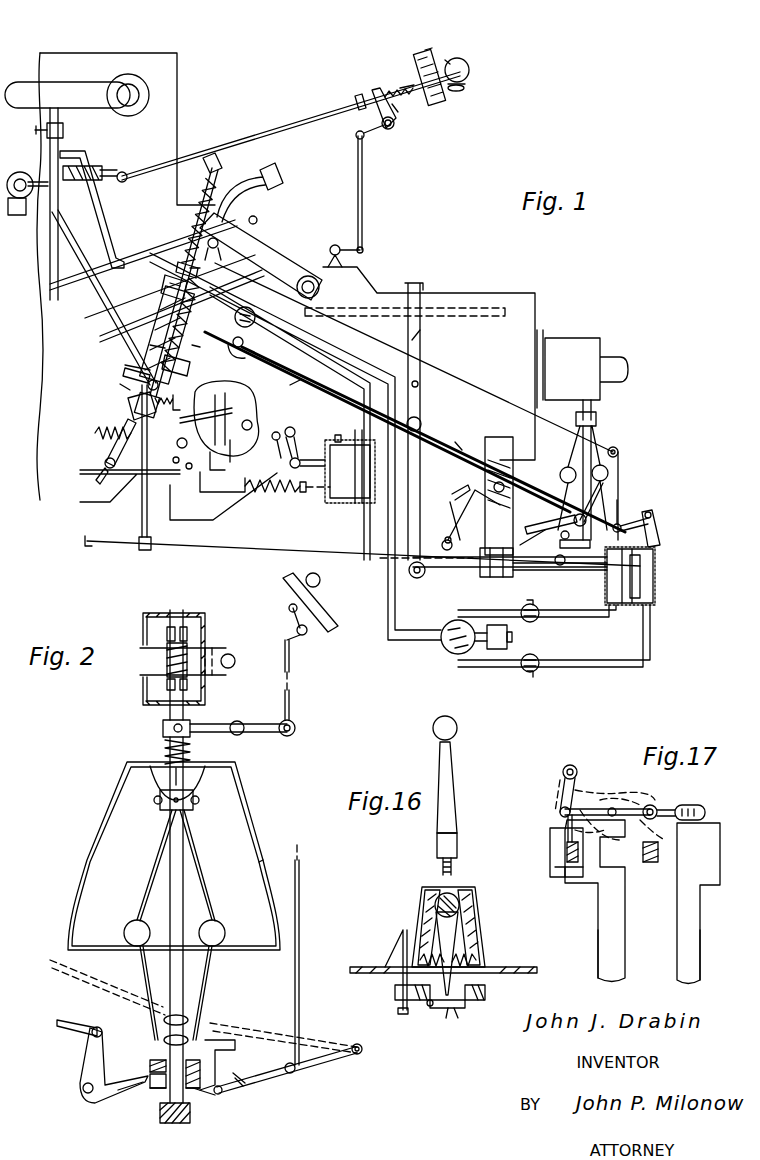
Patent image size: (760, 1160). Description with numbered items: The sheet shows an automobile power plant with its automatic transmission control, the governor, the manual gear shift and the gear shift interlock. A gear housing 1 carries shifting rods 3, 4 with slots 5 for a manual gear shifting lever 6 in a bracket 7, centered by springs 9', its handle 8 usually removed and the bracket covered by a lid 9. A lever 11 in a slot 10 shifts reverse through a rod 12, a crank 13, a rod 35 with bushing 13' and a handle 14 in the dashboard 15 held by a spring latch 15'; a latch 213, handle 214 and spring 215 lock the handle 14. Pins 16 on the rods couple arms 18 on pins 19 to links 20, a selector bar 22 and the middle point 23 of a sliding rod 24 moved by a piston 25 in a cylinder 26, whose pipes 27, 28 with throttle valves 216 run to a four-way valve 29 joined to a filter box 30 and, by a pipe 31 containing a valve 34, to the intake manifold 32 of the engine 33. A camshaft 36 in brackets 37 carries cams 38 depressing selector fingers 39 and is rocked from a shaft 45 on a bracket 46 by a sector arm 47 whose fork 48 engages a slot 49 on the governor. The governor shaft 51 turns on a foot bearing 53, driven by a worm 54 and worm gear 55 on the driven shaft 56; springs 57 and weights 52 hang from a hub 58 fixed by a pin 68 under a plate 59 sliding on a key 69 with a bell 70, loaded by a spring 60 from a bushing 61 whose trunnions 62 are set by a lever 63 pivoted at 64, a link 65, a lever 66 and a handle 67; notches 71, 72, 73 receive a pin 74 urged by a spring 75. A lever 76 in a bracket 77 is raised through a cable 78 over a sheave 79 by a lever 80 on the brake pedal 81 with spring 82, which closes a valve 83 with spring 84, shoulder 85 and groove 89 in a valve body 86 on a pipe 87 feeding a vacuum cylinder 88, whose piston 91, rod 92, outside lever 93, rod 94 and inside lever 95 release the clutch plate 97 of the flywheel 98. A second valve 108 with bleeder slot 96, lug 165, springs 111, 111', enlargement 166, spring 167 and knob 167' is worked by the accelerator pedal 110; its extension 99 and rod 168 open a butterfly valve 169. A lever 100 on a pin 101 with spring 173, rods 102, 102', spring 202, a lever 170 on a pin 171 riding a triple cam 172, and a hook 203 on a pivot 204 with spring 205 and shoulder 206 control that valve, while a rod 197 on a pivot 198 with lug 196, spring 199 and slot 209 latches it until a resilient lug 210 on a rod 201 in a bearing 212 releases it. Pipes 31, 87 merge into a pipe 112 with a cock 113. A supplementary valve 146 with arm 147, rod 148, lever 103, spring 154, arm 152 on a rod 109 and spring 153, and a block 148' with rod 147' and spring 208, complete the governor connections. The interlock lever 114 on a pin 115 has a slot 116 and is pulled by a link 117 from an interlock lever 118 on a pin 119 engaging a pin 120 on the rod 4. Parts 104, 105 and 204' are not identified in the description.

In FIG. 1, the gear housing 1 is at (518, 290).
In FIG. 16, the gear housing 1 is at (518, 967).
In FIG. 16, the gear shifting rod 3 is at (435, 1016).
In FIG. 17, the gear shifting rod 3 is at (587, 943).
In FIG. 1, the gear shifting rod 4 is at (405, 295).
In FIG. 16, the gear shifting rod 4 is at (488, 990).
In FIG. 17, the gear shifting rod 4 is at (711, 942).
In FIG. 17, the slots 5 is at (654, 902).
In FIG. 16, the manual gear shifting lever 6 is at (460, 945).
In FIG. 17, the manual gear shifting lever 6 is at (650, 863).
In FIG. 16, the bracket 7 is at (472, 915).
In FIG. 16, the handle 8 is at (457, 855).
In FIG. 16, the lid 9 is at (448, 915).
In FIG. 16, the springs 9' is at (466, 949).
In FIG. 16, the slot 10 is at (395, 992).
In FIG. 17, the slot 10 is at (566, 878).
In FIG. 1, the reverse gear shift lever 11 is at (336, 245).
In FIG. 16, the reverse gear shift lever 11 is at (402, 978).
In FIG. 17, the reverse gear shift lever 11 is at (567, 855).
In FIG. 1, the rod 12 is at (362, 208).
In FIG. 1, the crank 13 is at (384, 121).
In FIG. 1, the bushing 13' is at (362, 86).
In FIG. 1, the handle 14 is at (467, 64).
In FIG. 1, the dashboard 15 is at (441, 77).
In FIG. 2, the dashboard 15 is at (312, 617).
In FIG. 1, the spring latch 15' is at (444, 44).
In FIG. 1, the pins 16 is at (418, 283).
In FIG. 1, the arms 18 is at (421, 345).
In FIG. 1, the pins 19 is at (421, 426).
In FIG. 1, the links 20 is at (450, 545).
In FIG. 1, the selector bar 22 is at (498, 577).
In FIG. 1, the middle point 23 is at (575, 534).
In FIG. 1, the sliding rod 24 is at (570, 572).
In FIG. 1, the piston 25 is at (655, 560).
In FIG. 1, the cylinder 26 is at (655, 580).
In FIG. 1, the pipe 27 is at (560, 617).
In FIG. 1, the pipe 28 is at (585, 660).
In FIG. 1, the four-way valve 29 is at (448, 650).
In FIG. 1, the filter box 30 is at (507, 645).
In FIG. 1, the pipe 31 is at (100, 222).
In FIG. 1, the intake manifold 32 is at (58, 82).
In FIG. 1, the engine 33 is at (112, 53).
In FIG. 1, the valve 34 is at (106, 172).
In FIG. 1, the rod 35 is at (235, 140).
In FIG. 2, the camshaft 36 is at (155, 1090).
In FIG. 1, the brackets 37 is at (505, 437).
In FIG. 1, the cams 38 is at (474, 509).
In FIG. 1, the selector fingers 39 is at (425, 573).
In FIG. 1, the shaft 45 is at (572, 513).
In FIG. 1, the bracket 46 is at (563, 470).
In FIG. 1, the sector arm 47 is at (549, 529).
In FIG. 1, the fork 48 is at (568, 565).
In FIG. 1, the slot 49 is at (596, 502).
In FIG. 2, the slot 49 is at (118, 1092).
In FIG. 1, the governor shaft 51 is at (592, 410).
In FIG. 2, the governor shaft 51 is at (177, 610).
In FIG. 1, the weights 52 is at (608, 470).
In FIG. 2, the weights 52 is at (215, 946).
In FIG. 2, the foot bearing 53 is at (160, 1112).
In FIG. 2, the worm 54 is at (166, 672).
In FIG. 2, the worm gear 55 is at (166, 632).
In FIG. 1, the driven shaft 56 is at (622, 362).
In FIG. 2, the driven shaft 56 is at (228, 646).
In FIG. 1, the governor springs 57 is at (594, 434).
In FIG. 2, the governor springs 57 is at (205, 890).
In FIG. 1, the upper hub 58 is at (577, 418).
In FIG. 2, the upper hub 58 is at (198, 802).
In FIG. 2, the sliding plate 59 is at (143, 762).
In FIG. 2, the helical spring 60 is at (190, 752).
In FIG. 2, the sliding bushing 61 is at (163, 728).
In FIG. 2, the trunnions 62 is at (184, 726).
In FIG. 2, the lever 63 is at (255, 724).
In FIG. 2, the pivot 64 is at (238, 721).
In FIG. 2, the link 65 is at (290, 700).
In FIG. 2, the lever 66 is at (294, 640).
In FIG. 2, the handle 67 is at (322, 580).
In FIG. 2, the pin 68 is at (170, 802).
In FIG. 2, the key 69 is at (168, 775).
In FIG. 2, the bell 70 is at (250, 825).
In FIG. 2, the notch 71 is at (195, 1092).
In FIG. 2, the notch 72 is at (164, 1042).
In FIG. 2, the notch 73 is at (164, 1022).
In FIG. 2, the pin 74 is at (150, 1080).
In FIG. 2, the spring 75 is at (150, 1066).
In FIG. 1, the lever 76 is at (636, 522).
In FIG. 2, the lever 76 is at (262, 1078).
In FIG. 1, the bracket 77 is at (652, 527).
In FIG. 2, the bracket 77 is at (358, 1044).
In FIG. 1, the cable 78 is at (483, 388).
In FIG. 2, the cable 78 is at (299, 965).
In FIG. 1, the sheave 79 is at (619, 453).
In FIG. 1, the lever 80 is at (178, 262).
In FIG. 1, the brake pedal 81 is at (278, 172).
In FIG. 1, the spring 82 is at (220, 250).
In FIG. 1, the valve 83 is at (186, 364).
In FIG. 1, the spring 84 is at (188, 330).
In FIG. 1, the shoulder 85 is at (132, 374).
In FIG. 1, the valve body 86 is at (148, 346).
In FIG. 1, the pipe 87 is at (100, 282).
In FIG. 1, the vacuum cylinder 88 is at (335, 503).
In FIG. 1, the groove 89 is at (185, 344).
In FIG. 1, the piston 91 is at (360, 503).
In FIG. 1, the rod 92 is at (300, 460).
In FIG. 1, the outside lever 93 is at (295, 434).
In FIG. 1, the rod 94 is at (276, 445).
In FIG. 1, the inside lever 95 is at (248, 400).
In FIG. 1, the bleeder slot 96 is at (110, 318).
In FIG. 1, the clutch plate 97 is at (233, 447).
In FIG. 1, the engine flywheel 98 is at (195, 420).
In FIG. 1, the extension 99 is at (135, 400).
In FIG. 1, the lever 100 is at (129, 485).
In FIG. 1, the pin 101 is at (105, 460).
In FIG. 1, the rod 102 is at (223, 496).
In FIG. 1, the rod 102' is at (311, 498).
In FIG. 1, the lever 103 is at (540, 555).
In FIG. 2, the lever 103 is at (82, 1072).
In FIG. 1, the gear 104 is at (498, 479).
In FIG. 1, the spring 105 is at (75, 182).
In FIG. 1, the second valve 108 is at (148, 334).
In FIG. 1, the rod 109 is at (192, 232).
In FIG. 1, the accelerator pedal 110 is at (220, 170).
In FIG. 1, the retrieving spring 111 is at (182, 306).
In FIG. 1, the second spring 111' is at (106, 361).
In FIG. 1, the common pipe 112 is at (60, 150).
In FIG. 1, the cock 113 is at (63, 131).
In FIG. 16, the interlock lever 114 is at (400, 1012).
In FIG. 17, the interlock lever 114 is at (550, 835).
In FIG. 17, the pin 115 is at (576, 766).
In FIG. 17, the slot 116 is at (556, 870).
In FIG. 17, the link 117 is at (585, 808).
In FIG. 17, the interlock lever 118 is at (636, 806).
In FIG. 16, the pin 119 is at (455, 1012).
In FIG. 17, the pin 119 is at (656, 806).
In FIG. 17, the pin 120 is at (698, 806).
In FIG. 1, the supplementary valve 146 is at (253, 312).
In FIG. 1, the arm 147 is at (429, 434).
In FIG. 1, the rod 147' is at (466, 437).
In FIG. 2, the rod 147' is at (107, 987).
In FIG. 1, the rod 148 is at (387, 422).
In FIG. 2, the rod 148 is at (79, 1016).
In FIG. 1, the block 148' is at (643, 503).
In FIG. 2, the block 148' is at (278, 1056).
In FIG. 1, the arm 152 is at (232, 305).
In FIG. 1, the spring 153 is at (198, 214).
In FIG. 1, the spring 154 is at (243, 352).
In FIG. 1, the lug 165 is at (165, 287).
In FIG. 1, the enlargement 166 is at (120, 382).
In FIG. 1, the spring 167 is at (153, 276).
In FIG. 1, the knob 167' is at (193, 269).
In FIG. 1, the rod 168 is at (70, 242).
In FIG. 1, the butterfly valve 169 is at (18, 205).
In FIG. 1, the lever 170 is at (462, 521).
In FIG. 1, the pin 171 is at (460, 541).
In FIG. 1, the triple cam 172 is at (465, 503).
In FIG. 1, the spring 173 is at (105, 430).
In FIG. 1, the lug 196 is at (168, 398).
In FIG. 1, the rod 197 is at (140, 525).
In FIG. 1, the pivot 198 is at (162, 377).
In FIG. 1, the spring 199 is at (173, 446).
In FIG. 1, the rod 201 is at (270, 553).
In FIG. 1, the spring 202 is at (272, 492).
In FIG. 1, the hook 203 is at (215, 466).
In FIG. 1, the pivot 204 is at (168, 465).
In FIG. 1, the pin 204' is at (317, 378).
In FIG. 1, the spring 205 is at (192, 471).
In FIG. 1, the shoulder 206 is at (222, 482).
In FIG. 2, the spring 208 is at (238, 1086).
In FIG. 1, the slot 209 is at (127, 407).
In FIG. 1, the resilient lug 210 is at (151, 542).
In FIG. 1, the bearing 212 is at (88, 548).
In FIG. 1, the latch 213 is at (394, 110).
In FIG. 1, the handle 214 is at (465, 88).
In FIG. 1, the spring 215 is at (466, 82).
In FIG. 1, the throttle valves 216 is at (537, 610).